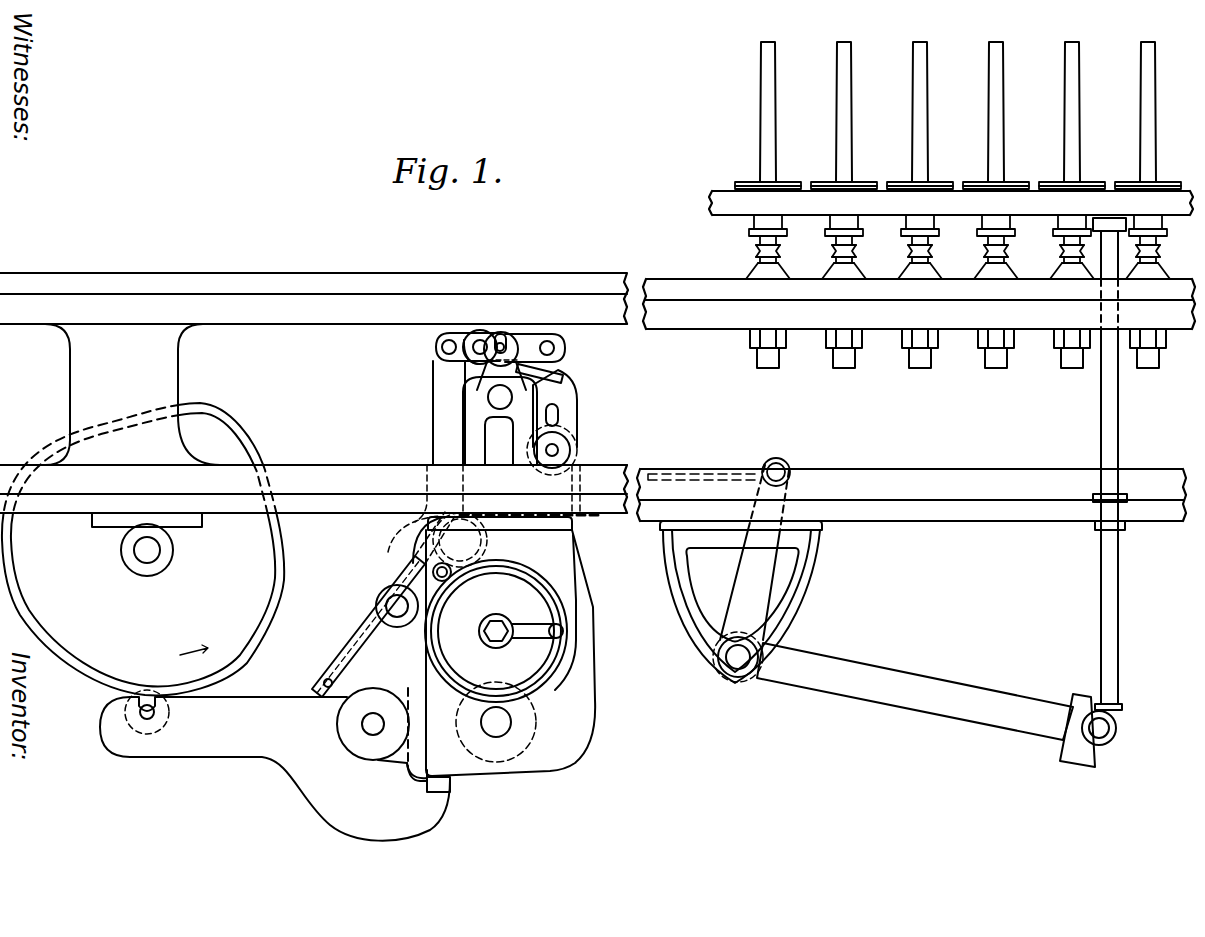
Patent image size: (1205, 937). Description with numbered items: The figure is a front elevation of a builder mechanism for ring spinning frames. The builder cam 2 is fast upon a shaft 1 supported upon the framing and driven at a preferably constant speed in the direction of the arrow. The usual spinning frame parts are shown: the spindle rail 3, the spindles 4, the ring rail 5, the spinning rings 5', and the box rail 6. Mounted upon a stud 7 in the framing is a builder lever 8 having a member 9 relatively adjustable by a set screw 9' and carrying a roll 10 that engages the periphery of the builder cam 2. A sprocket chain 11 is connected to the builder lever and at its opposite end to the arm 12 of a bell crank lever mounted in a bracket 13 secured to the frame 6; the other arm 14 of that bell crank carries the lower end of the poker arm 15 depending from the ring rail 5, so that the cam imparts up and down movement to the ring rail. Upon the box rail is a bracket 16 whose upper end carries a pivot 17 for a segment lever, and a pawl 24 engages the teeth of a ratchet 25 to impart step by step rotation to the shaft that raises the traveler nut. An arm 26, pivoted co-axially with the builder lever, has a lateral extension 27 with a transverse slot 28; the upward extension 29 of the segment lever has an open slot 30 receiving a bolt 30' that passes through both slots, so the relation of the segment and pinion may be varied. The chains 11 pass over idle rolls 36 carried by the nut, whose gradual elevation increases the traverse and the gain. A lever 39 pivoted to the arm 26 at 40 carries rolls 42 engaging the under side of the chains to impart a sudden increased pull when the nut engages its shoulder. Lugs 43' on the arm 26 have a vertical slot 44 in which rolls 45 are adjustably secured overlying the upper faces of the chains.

The shaft 1 is at (135, 547).
The builder cam 2 is at (243, 602).
The spindle rail 3 is at (354, 287).
The spindles 4 is at (756, 248).
The ring rail 5 is at (951, 185).
The spinning rings 5' is at (958, 168).
The box rail 6 is at (1052, 480).
The stud 7 is at (500, 725).
The builder lever 8 is at (462, 767).
The member 9 is at (275, 769).
The set screw 9' is at (404, 788).
The roll 10 is at (145, 703).
The sprocket chain 11 is at (348, 632).
The arm of bell crank lever 12 is at (745, 568).
The bracket 13 is at (800, 602).
The arm of bell crank lever 14 is at (937, 688).
The poker arm 15 is at (1102, 578).
The bracket 16 is at (470, 436).
The pivot 17 is at (490, 398).
The pawl 24 is at (467, 578).
The ratchet 25 is at (560, 613).
The arm 26 is at (580, 740).
The lateral extension 27 is at (566, 348).
The transverse slot 28 is at (560, 365).
The upward extension of lever 29 is at (510, 338).
The open slot 30 is at (483, 330).
The bolt 30' is at (454, 330).
The idle rolls 36 is at (392, 550).
The lever 39 is at (445, 389).
The pivot 40 is at (437, 347).
The rolls 42 is at (395, 630).
The lugs 43' is at (583, 408).
The vertical slot 44 is at (559, 414).
The rolls 45 is at (571, 450).